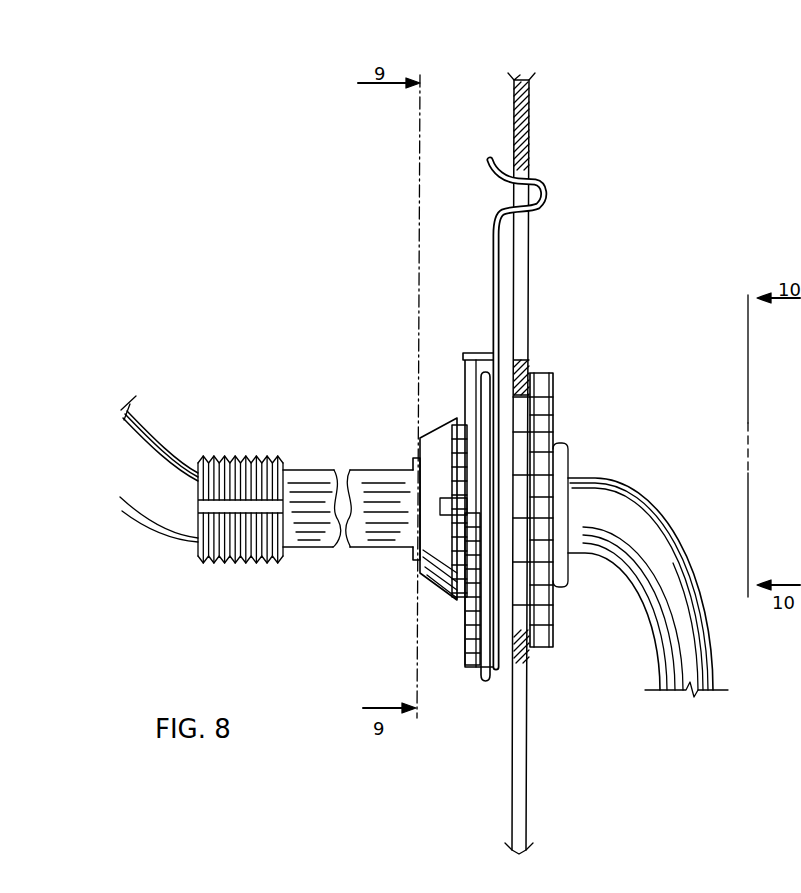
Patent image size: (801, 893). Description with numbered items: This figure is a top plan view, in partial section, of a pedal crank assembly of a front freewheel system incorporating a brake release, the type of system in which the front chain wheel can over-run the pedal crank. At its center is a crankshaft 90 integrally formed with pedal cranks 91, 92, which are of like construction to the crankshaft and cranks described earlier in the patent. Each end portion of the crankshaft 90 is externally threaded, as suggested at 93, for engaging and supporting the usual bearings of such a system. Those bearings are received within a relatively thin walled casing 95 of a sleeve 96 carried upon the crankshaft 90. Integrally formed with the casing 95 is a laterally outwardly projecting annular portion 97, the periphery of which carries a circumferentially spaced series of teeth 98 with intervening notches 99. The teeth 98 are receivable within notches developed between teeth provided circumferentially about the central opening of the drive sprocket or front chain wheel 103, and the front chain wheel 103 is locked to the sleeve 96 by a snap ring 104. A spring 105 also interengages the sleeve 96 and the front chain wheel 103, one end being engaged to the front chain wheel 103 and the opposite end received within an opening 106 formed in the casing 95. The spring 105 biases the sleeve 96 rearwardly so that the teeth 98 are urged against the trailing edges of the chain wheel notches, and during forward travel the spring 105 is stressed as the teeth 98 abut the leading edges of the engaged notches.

The crankshaft 90 is at (343, 553).
The pedal crank 91 is at (128, 412).
The pedal crank 92 is at (650, 500).
The external threads 93 is at (228, 457).
The casing 95 is at (484, 375).
The sleeve 96 is at (512, 428).
The annular portion 97 is at (533, 432).
The teeth 98 is at (548, 485).
The notches 99 is at (545, 460).
The front chain wheel 103 is at (528, 262).
The snap ring 104 is at (533, 373).
The spring 105 is at (498, 300).
The opening 106 is at (470, 366).